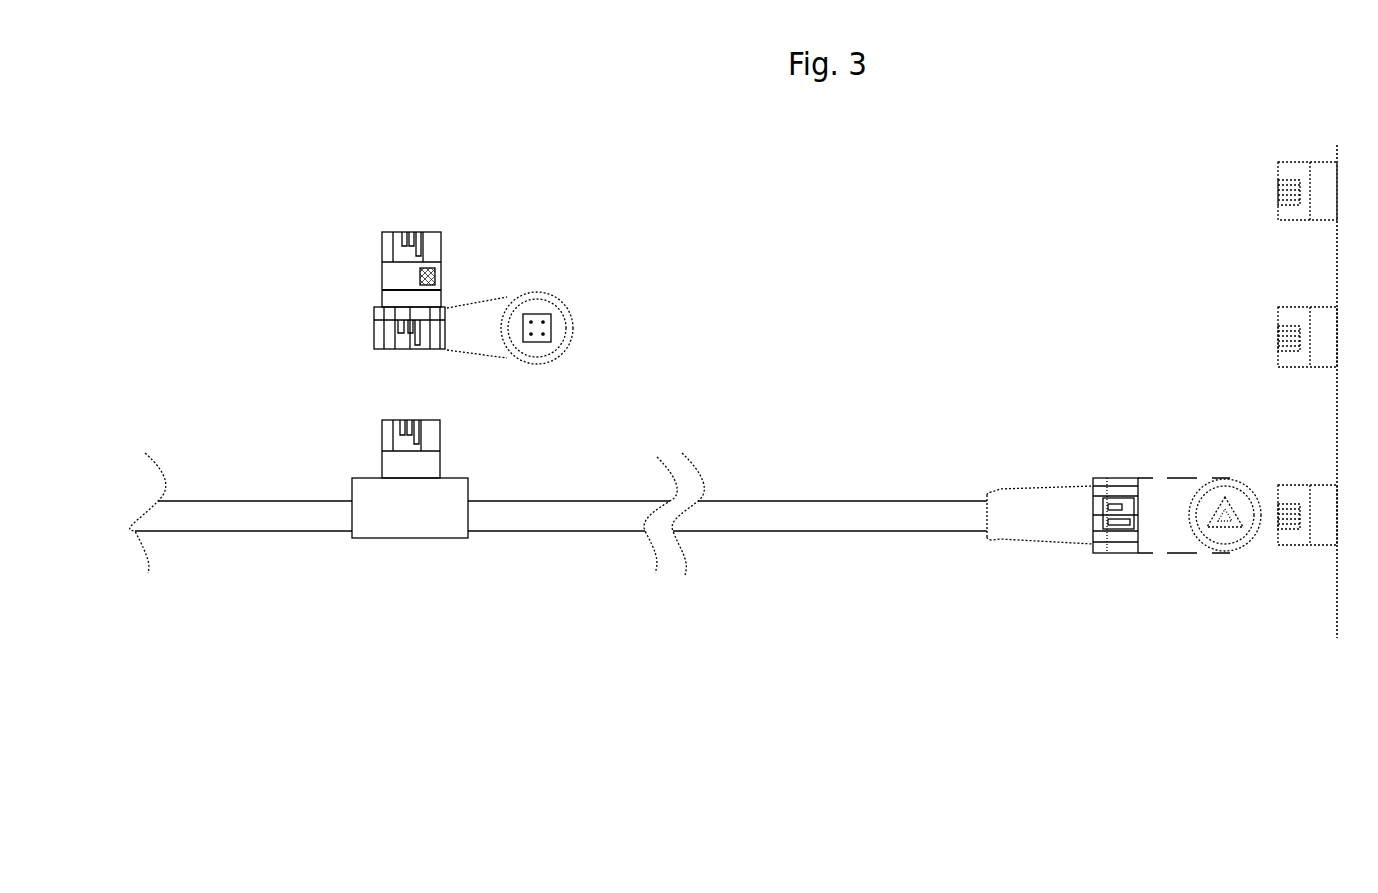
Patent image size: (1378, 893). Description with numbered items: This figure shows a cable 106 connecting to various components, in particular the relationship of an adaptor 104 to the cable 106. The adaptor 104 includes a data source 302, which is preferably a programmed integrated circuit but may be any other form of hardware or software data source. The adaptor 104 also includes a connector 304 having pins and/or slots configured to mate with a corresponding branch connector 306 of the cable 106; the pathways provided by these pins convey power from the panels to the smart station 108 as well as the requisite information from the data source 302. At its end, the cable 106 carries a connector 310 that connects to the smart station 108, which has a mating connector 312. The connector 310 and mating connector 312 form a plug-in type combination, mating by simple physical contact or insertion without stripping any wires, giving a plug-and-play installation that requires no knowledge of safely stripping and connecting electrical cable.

The adaptor 104 is at (370, 287).
The data source 302 is at (438, 263).
The connector 304 is at (368, 362).
The branch connector 306 is at (453, 440).
The cable 106 is at (598, 532).
The connector 310 is at (1087, 572).
The mating connector 312 is at (1275, 455).
The smart station 108 is at (1337, 610).